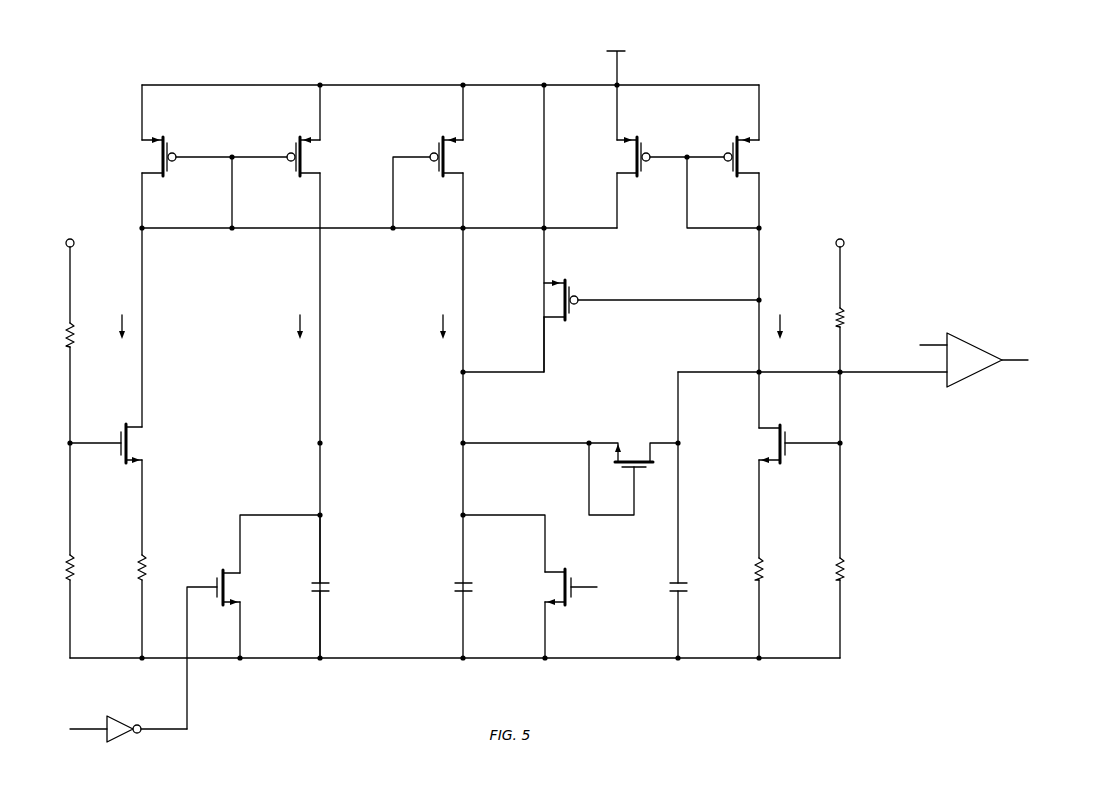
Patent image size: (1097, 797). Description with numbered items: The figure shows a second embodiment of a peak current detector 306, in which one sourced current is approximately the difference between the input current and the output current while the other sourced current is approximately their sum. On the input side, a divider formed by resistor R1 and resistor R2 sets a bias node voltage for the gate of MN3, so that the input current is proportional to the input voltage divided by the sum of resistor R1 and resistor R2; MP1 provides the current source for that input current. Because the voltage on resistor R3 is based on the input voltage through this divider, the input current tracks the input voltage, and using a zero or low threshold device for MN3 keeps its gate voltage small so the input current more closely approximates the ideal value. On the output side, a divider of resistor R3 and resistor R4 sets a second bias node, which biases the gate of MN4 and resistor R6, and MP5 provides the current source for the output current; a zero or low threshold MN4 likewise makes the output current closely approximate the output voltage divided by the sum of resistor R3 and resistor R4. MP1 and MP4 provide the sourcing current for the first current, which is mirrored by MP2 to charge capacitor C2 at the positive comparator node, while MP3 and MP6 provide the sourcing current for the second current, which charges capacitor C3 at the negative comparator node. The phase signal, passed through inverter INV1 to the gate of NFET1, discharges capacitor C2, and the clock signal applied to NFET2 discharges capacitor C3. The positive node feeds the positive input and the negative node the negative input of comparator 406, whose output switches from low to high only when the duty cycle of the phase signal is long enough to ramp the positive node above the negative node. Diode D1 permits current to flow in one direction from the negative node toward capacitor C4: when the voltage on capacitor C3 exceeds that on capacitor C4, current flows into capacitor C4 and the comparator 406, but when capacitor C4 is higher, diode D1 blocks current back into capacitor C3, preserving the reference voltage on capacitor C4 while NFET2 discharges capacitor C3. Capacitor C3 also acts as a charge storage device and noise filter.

The peak current detector 306 is at (866, 148).
The comparator 406 is at (977, 343).
The PMOS transistor MP1 is at (140, 156).
The PMOS transistor MP2 is at (323, 156).
The PMOS transistor MP3 is at (465, 156).
The PMOS transistor MP4 is at (616, 156).
The PMOS transistor MP5 is at (759, 156).
The PMOS transistor MP6 is at (545, 300).
The transistor MN3 is at (150, 443).
The transistor MN4 is at (755, 444).
The element NFET1 is at (252, 587).
The element NFET2 is at (535, 587).
The diode D1 is at (621, 469).
The capacitor C2 is at (334, 587).
The capacitor C3 is at (451, 587).
The capacitor C4 is at (691, 588).
The resistor R1 is at (60, 335).
The resistor R2 is at (59, 567).
The resistor R3 is at (493, 444).
The resistor R4 is at (852, 569).
The resistor R6 is at (771, 569).
The inverter INV1 is at (123, 719).